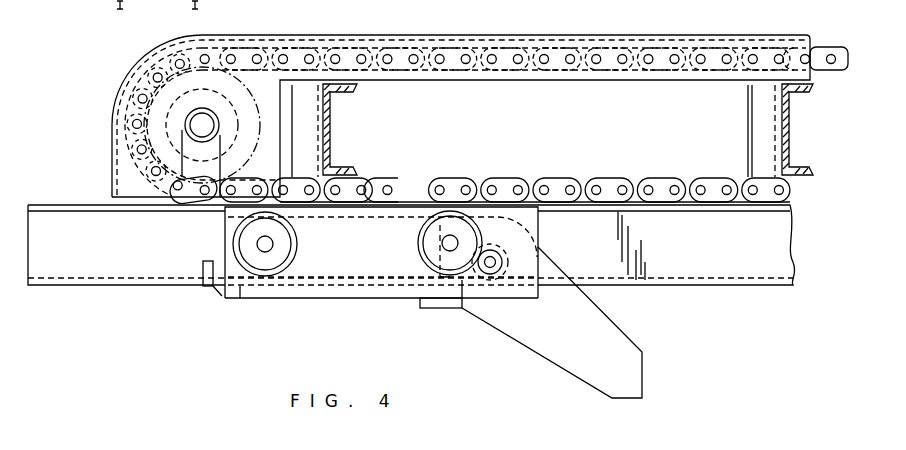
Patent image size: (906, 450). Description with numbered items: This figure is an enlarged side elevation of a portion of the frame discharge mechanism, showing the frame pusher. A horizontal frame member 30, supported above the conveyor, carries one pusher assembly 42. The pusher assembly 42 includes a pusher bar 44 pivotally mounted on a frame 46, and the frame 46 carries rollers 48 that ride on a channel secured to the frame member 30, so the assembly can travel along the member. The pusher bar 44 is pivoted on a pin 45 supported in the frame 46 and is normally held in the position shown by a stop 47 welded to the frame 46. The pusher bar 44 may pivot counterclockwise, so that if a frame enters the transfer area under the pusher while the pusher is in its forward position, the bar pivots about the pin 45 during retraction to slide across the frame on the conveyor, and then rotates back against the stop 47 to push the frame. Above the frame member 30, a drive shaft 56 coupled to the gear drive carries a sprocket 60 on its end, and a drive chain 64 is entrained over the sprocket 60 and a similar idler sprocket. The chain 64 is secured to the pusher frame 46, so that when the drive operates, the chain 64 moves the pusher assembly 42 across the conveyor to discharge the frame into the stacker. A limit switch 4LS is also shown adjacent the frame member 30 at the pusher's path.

The horizontal frame member 30 is at (178, 267).
The pusher assembly 42 is at (272, 305).
The pusher bar 44 is at (630, 358).
The pin 45 is at (498, 262).
The frame 46 is at (372, 288).
The stop 47 is at (439, 301).
The rollers 48 is at (257, 243).
The drive shaft 56 is at (200, 125).
The sprocket 60 is at (138, 77).
The drive chain 64 is at (617, 180).
The limit switch 4LS is at (208, 269).